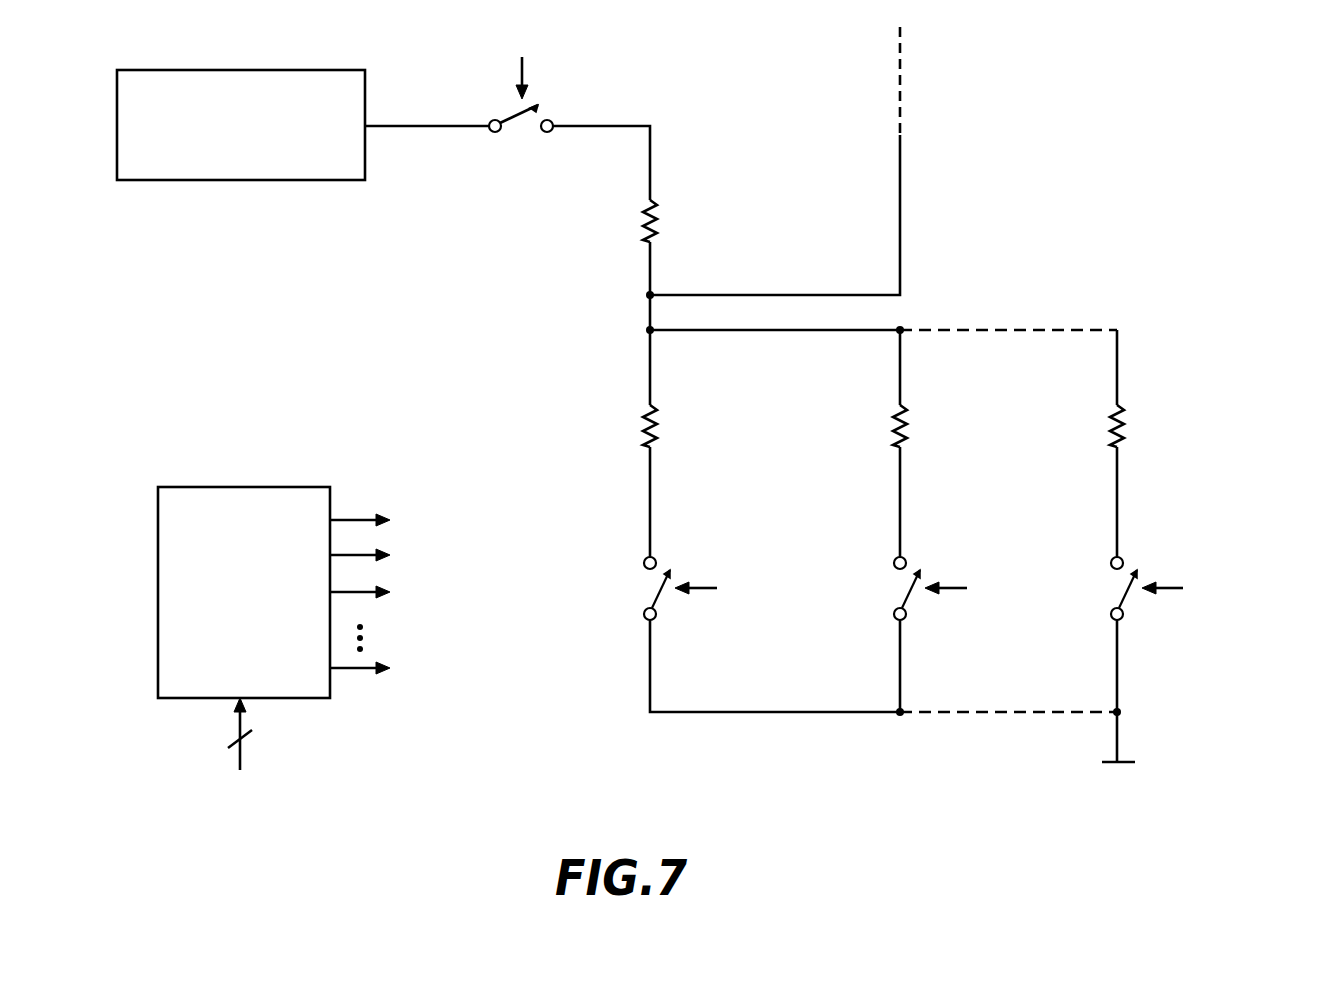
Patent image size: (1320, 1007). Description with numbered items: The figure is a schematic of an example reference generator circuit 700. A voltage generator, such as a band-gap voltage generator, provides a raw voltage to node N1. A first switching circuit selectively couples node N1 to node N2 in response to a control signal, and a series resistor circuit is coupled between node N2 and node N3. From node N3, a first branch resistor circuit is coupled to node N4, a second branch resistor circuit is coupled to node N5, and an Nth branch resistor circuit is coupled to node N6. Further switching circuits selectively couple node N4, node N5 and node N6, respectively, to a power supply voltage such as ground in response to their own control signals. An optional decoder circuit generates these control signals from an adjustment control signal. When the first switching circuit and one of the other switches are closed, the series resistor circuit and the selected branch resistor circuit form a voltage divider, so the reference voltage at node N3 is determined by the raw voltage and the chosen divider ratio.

The reference generator circuit 700 is at (1190, 82).
The node N1 is at (412, 126).
The node N2 is at (650, 163).
The node N3 is at (940, 147).
The node N4 is at (650, 502).
The node N5 is at (900, 502).
The node N6 is at (1117, 502).